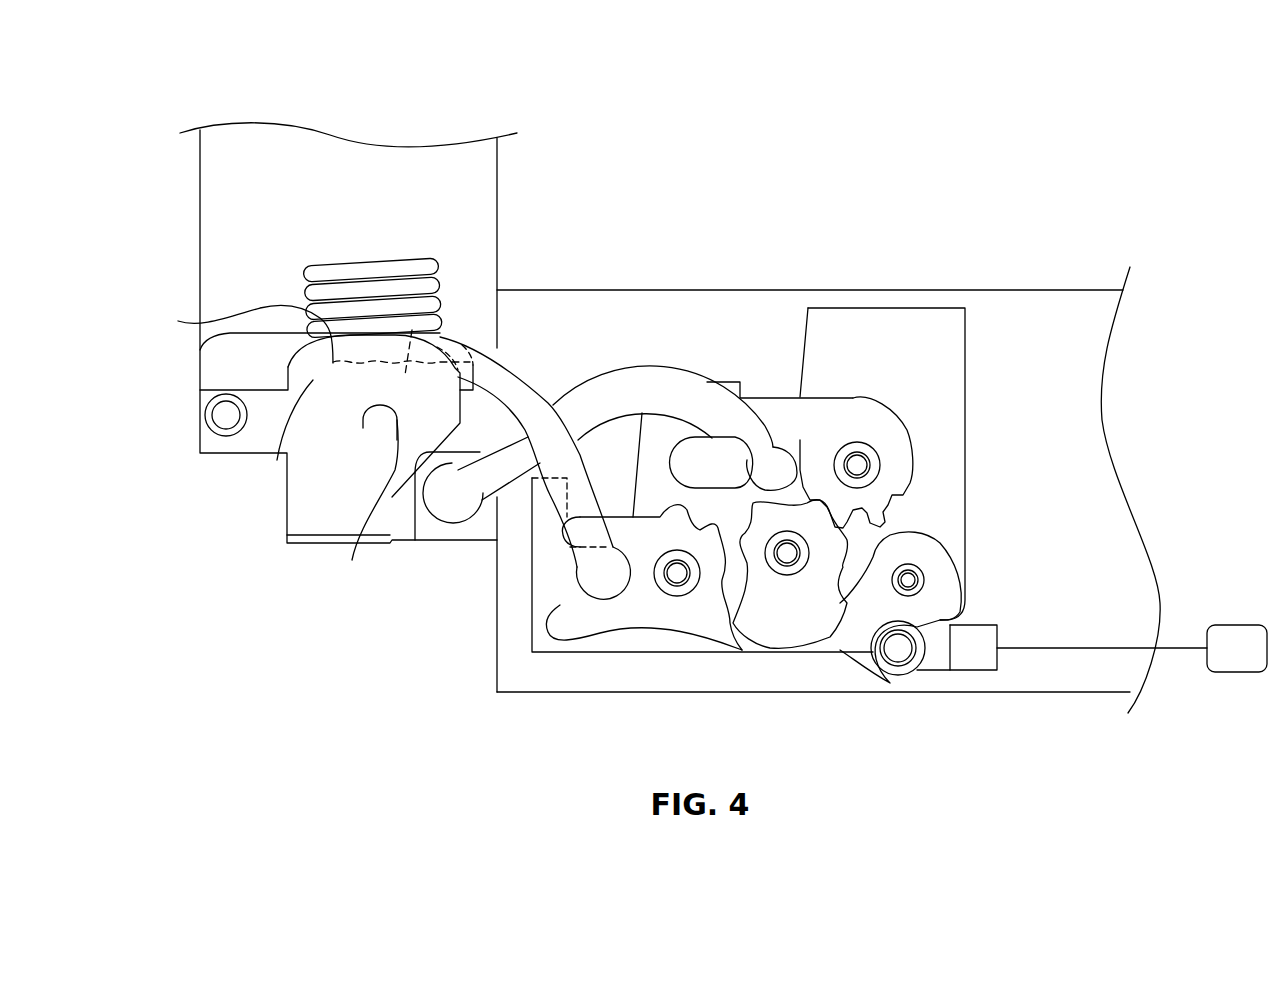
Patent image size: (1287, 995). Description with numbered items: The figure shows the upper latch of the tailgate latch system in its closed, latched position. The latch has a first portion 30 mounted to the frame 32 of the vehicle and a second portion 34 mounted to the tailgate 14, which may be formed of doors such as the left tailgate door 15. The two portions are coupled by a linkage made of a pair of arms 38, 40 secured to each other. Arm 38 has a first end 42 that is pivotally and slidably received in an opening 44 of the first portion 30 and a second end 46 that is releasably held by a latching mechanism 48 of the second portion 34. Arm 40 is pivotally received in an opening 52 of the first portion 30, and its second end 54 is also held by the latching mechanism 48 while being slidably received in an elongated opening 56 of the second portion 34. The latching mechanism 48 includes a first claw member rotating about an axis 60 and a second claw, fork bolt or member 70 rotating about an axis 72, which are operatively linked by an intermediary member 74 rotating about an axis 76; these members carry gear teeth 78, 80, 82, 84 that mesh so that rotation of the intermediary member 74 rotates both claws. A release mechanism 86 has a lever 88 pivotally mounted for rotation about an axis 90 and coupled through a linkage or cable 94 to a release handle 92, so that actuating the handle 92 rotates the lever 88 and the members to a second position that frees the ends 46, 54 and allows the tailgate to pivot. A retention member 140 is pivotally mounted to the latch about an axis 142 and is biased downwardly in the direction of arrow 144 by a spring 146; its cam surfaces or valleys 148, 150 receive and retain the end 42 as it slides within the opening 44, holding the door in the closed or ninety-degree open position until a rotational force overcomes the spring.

The tailgate 14 is at (1062, 318).
The left tailgate door 15 is at (1023, 318).
The first portion 30 is at (272, 502).
The frame 32 is at (483, 158).
The second portion 34 is at (541, 678).
The arm 38 is at (520, 385).
The arm 40 is at (645, 397).
The first end 42 is at (279, 452).
The opening 44 is at (380, 480).
The second end 46 is at (600, 574).
The latching mechanism 48 is at (913, 422).
The opening 52 is at (453, 512).
The second end 54 is at (773, 460).
The elongated opening 56 is at (710, 437).
The axis 60 is at (682, 580).
The second claw, fork bolt or member 70 is at (860, 417).
The axis 72 is at (858, 467).
The intermediary member 74 is at (813, 623).
The axis 76 is at (787, 556).
The gear teeth 78 is at (710, 533).
The gear teeth 80 is at (745, 547).
The gear teeth 82 is at (820, 543).
The gear teeth 84 is at (880, 515).
The release mechanism 86 is at (988, 587).
The lever 88 is at (940, 597).
The axis 90 is at (910, 580).
The release handle 92 is at (1232, 638).
The linkage or cable 94 is at (1062, 648).
The retention member 140 is at (233, 360).
The axis 142 is at (226, 414).
The arrow 144 is at (145, 252).
The spring 146 is at (438, 258).
The cam surface or valley 148 is at (304, 334).
The cam surface or valley 150 is at (452, 302).